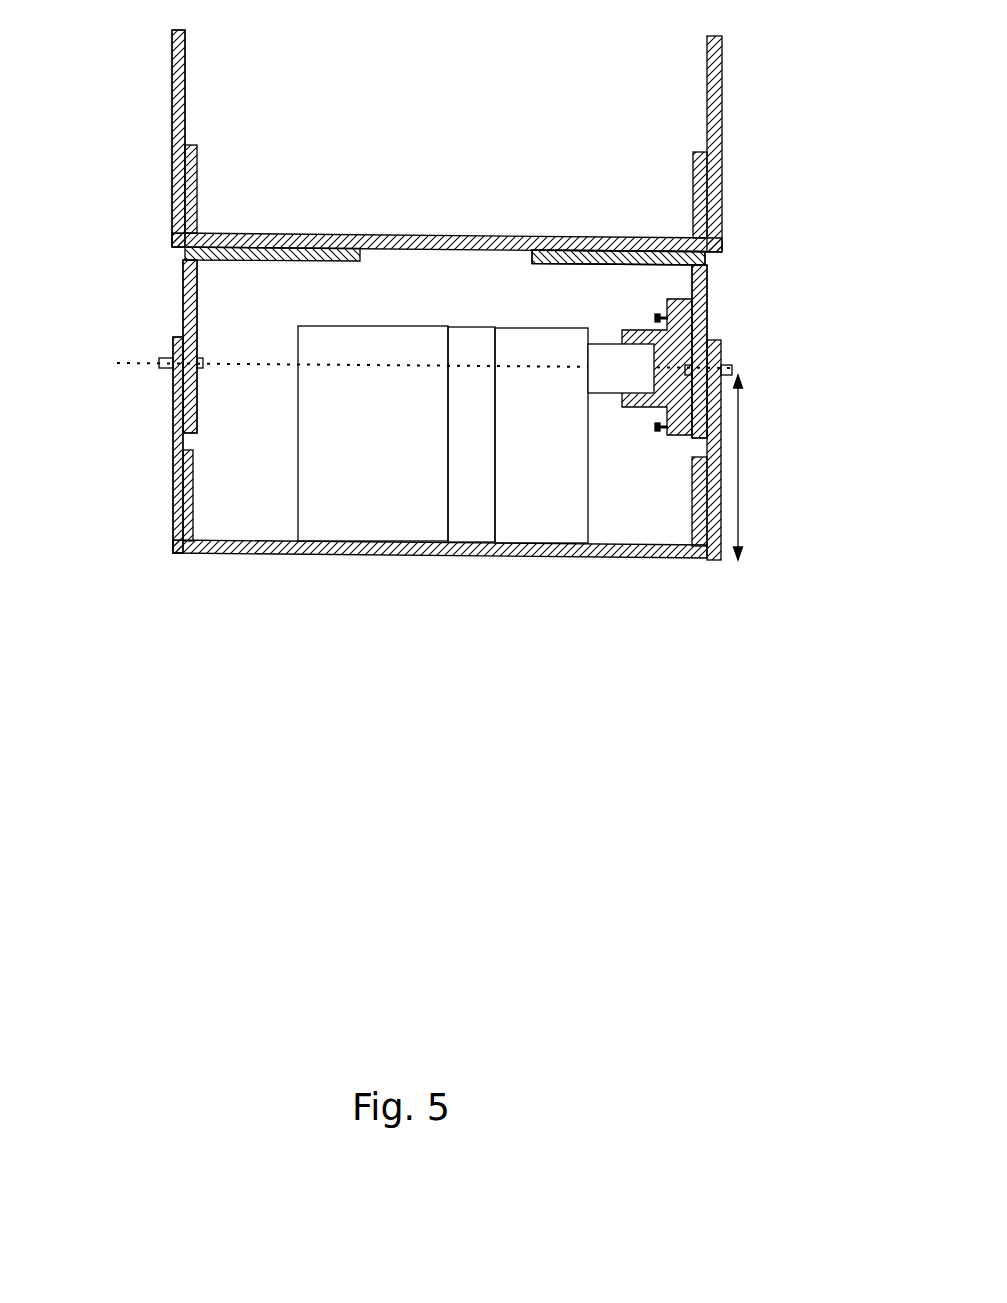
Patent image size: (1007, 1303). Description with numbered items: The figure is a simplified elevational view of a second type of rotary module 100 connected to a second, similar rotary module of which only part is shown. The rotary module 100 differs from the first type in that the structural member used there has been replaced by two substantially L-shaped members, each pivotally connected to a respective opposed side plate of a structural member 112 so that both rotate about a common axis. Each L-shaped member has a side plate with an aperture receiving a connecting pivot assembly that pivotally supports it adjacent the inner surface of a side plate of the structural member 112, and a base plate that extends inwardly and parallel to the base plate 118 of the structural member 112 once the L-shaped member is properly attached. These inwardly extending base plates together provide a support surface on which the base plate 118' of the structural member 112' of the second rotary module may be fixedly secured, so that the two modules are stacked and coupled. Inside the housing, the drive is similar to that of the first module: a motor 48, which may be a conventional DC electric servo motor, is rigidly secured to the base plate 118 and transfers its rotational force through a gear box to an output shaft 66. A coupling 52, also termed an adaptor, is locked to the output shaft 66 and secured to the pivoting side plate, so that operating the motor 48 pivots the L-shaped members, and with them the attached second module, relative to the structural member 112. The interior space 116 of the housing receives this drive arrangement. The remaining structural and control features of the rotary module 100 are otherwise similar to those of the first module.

The rotary module 100 is at (768, 395).
The structural member 112 is at (107, 445).
The structural member 112' is at (107, 138).
The housing interior chamber 116 is at (503, 308).
The base plate 118 is at (440, 582).
The base plate 118' is at (447, 197).
The motor 48 is at (400, 367).
The coupling 52 is at (670, 298).
The output shaft 66 is at (625, 367).